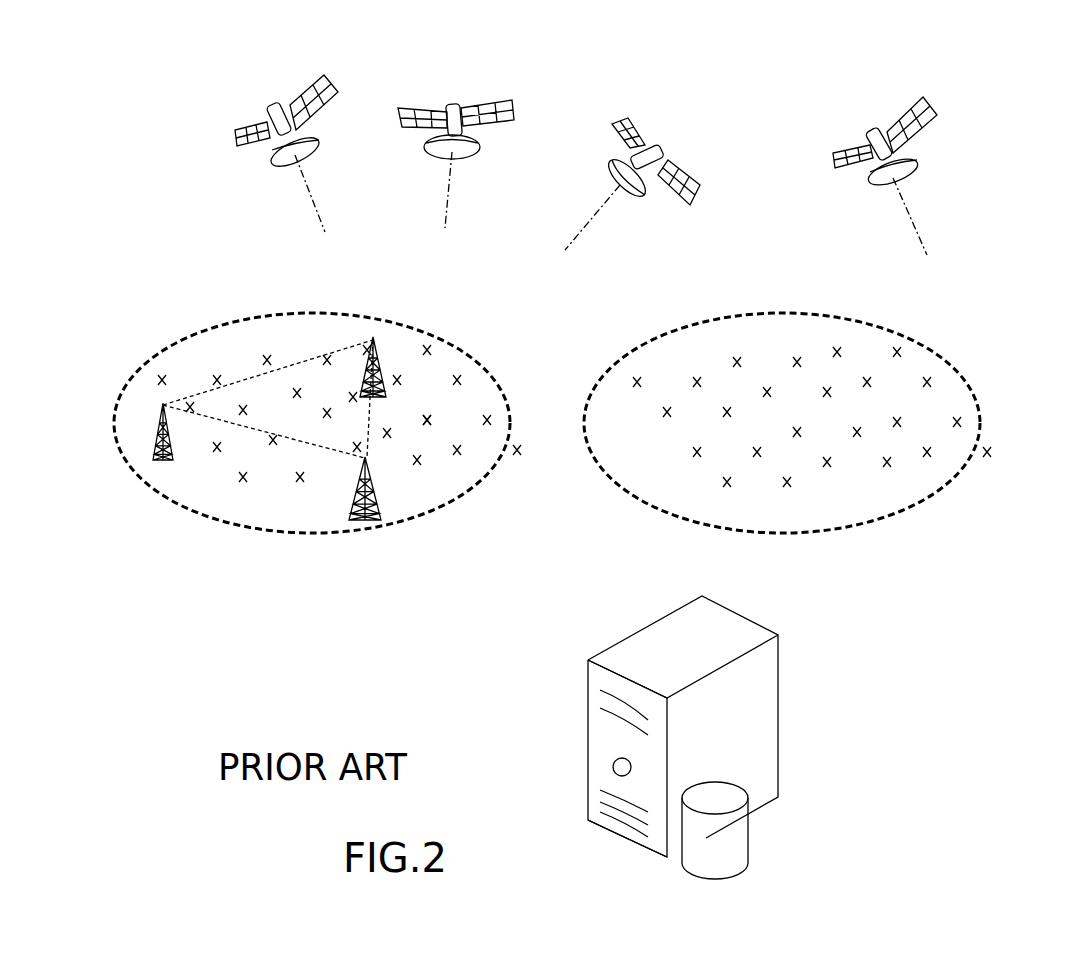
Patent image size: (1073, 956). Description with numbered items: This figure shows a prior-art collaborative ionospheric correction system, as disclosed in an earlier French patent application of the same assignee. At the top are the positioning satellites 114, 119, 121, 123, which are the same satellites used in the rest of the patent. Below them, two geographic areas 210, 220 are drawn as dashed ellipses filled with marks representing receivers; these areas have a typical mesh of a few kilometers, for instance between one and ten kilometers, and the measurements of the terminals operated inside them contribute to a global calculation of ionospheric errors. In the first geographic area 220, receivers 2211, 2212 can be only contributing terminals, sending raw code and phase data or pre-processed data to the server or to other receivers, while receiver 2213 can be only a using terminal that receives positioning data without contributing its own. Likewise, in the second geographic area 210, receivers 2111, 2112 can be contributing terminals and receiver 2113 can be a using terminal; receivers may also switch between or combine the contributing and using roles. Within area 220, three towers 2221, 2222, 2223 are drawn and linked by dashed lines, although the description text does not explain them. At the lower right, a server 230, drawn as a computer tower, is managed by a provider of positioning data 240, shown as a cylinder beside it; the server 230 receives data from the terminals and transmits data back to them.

The satellite 123 is at (270, 108).
The satellite 119 is at (453, 103).
The satellite 114 is at (663, 153).
The satellite 121 is at (920, 158).
The geographic area 220 is at (370, 322).
The geographic area 210 is at (933, 357).
The terminal 2221 is at (155, 463).
The terminal 2222 is at (367, 513).
The terminal 2223 is at (380, 367).
The contributing terminal 2211 is at (437, 420).
The contributing terminal 2212 is at (420, 466).
The using terminal 2213 is at (220, 457).
The contributing terminal 2111 is at (890, 465).
The contributing terminal 2112 is at (790, 485).
The using terminal 2113 is at (698, 455).
The server 230 is at (770, 718).
The provider of positioning data 240 is at (740, 848).